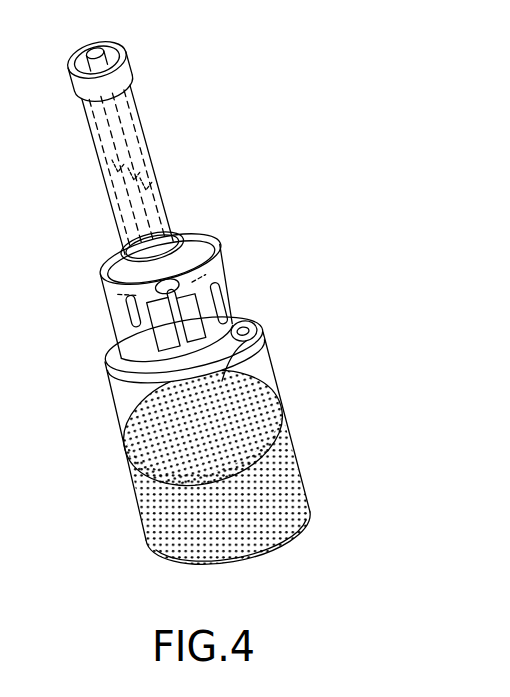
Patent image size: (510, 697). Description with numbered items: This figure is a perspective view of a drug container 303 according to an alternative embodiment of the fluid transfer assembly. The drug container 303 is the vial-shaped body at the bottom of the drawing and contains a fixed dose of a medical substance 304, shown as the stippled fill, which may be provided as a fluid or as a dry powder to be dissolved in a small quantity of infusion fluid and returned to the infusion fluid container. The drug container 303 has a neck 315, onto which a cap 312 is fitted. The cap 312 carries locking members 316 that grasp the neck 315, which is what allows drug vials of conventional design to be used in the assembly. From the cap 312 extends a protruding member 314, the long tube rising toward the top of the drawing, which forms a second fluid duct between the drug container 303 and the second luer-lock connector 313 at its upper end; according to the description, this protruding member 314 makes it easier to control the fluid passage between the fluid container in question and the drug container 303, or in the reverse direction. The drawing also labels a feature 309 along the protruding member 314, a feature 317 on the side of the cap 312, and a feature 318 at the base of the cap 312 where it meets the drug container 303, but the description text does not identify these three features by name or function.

The drug container 303 is at (204, 285).
The medical substance 304 is at (170, 506).
The internal passage 309 is at (120, 165).
The cap 312 is at (233, 244).
The second luer-lock connector 313 is at (98, 48).
The protruding member 314 is at (139, 114).
The neck 315 is at (256, 349).
The locking members 316 is at (233, 314).
The tab 317 is at (119, 291).
The flange 318 is at (170, 357).